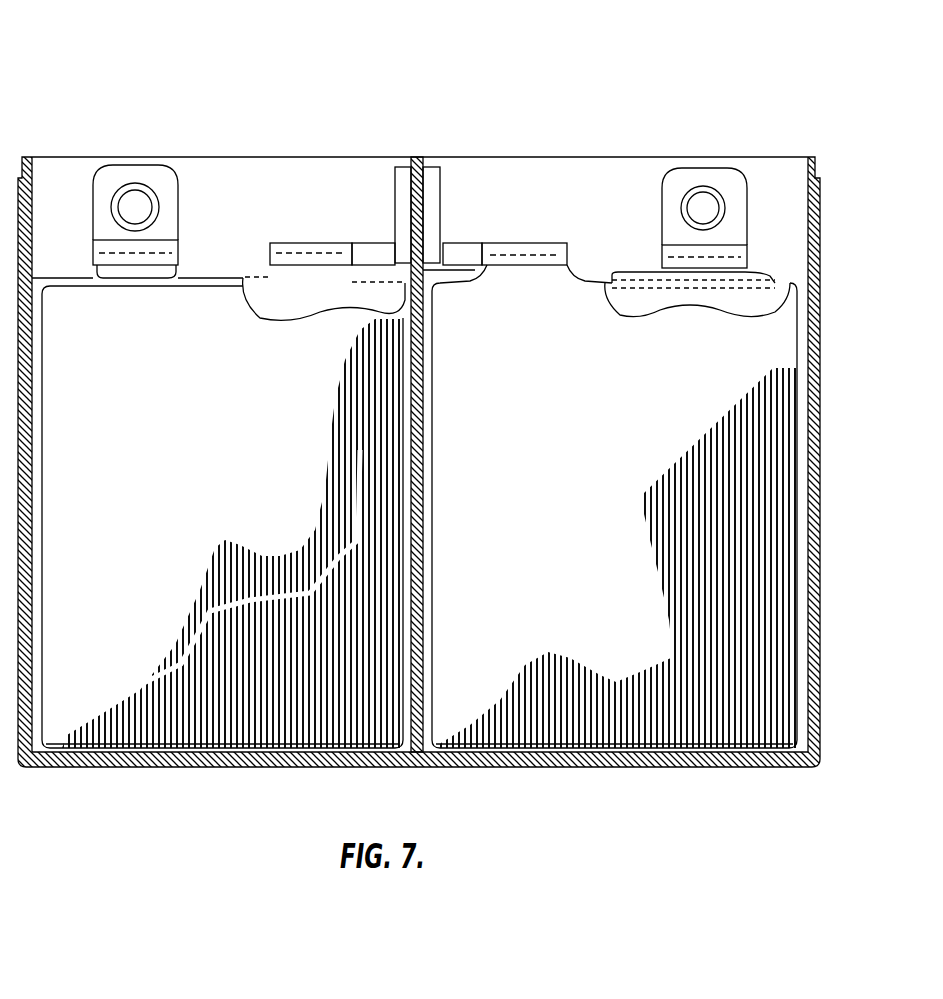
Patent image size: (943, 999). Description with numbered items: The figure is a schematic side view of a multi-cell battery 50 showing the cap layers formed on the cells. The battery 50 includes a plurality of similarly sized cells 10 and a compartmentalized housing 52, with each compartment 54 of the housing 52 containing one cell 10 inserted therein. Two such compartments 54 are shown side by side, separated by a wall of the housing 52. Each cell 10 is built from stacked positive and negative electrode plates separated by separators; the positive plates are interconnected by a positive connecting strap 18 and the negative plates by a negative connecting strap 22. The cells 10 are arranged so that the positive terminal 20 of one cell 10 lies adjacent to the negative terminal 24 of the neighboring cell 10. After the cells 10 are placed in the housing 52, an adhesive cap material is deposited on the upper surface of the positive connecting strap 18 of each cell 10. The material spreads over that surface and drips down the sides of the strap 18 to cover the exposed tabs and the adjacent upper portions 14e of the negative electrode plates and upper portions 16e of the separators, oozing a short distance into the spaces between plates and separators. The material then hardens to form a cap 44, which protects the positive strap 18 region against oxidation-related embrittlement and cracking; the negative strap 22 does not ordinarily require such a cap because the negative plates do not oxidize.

The battery cell 10 is at (60, 220).
The upper portion of the negative electrode plates 14e is at (262, 268).
The upper portion of the separators 16e is at (383, 265).
The positive connecting strap 18 is at (336, 243).
The positive terminal 20 is at (388, 180).
The negative connecting strap 22 is at (178, 250).
The negative terminal 24 is at (163, 175).
The cap 44 is at (266, 243).
The multi-cell battery 50 is at (199, 824).
The compartmentalized housing 52 is at (100, 772).
The compartment 54 is at (281, 182).